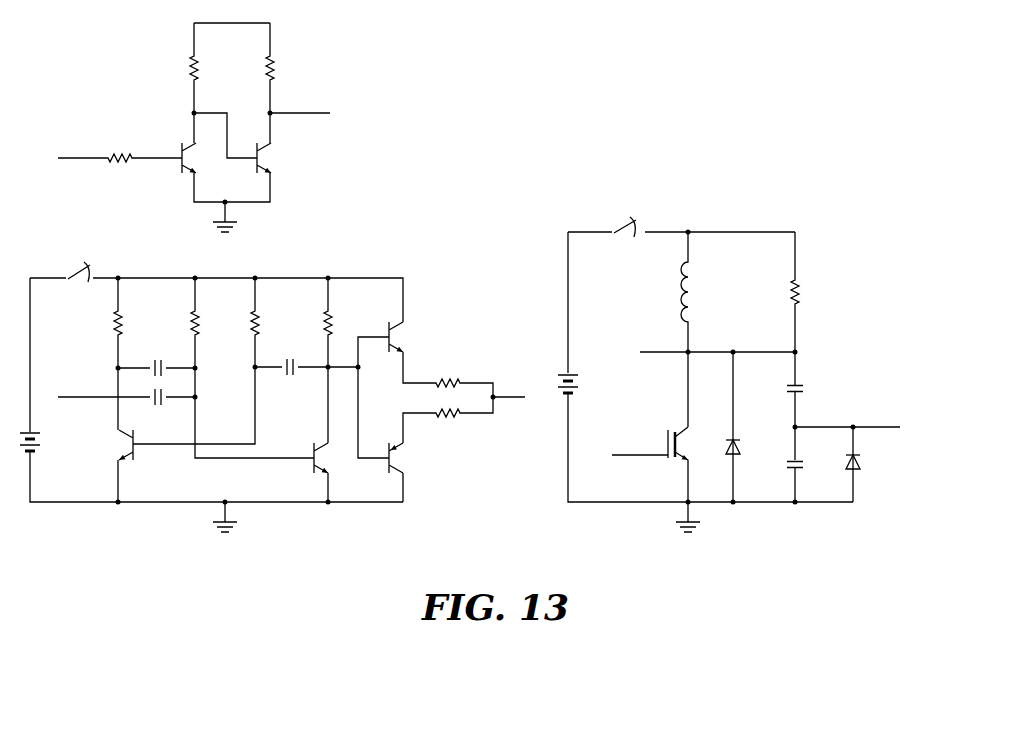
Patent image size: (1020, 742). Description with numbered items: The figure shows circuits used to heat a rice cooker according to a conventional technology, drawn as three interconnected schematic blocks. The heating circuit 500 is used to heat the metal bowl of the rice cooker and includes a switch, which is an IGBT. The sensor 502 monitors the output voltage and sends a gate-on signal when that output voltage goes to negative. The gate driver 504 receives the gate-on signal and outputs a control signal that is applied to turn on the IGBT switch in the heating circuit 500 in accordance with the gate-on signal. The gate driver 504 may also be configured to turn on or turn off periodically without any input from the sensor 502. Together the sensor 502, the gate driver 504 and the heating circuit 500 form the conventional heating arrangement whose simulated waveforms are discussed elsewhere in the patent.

The heating circuit 500 is at (732, 195).
The sensor 502 is at (343, 50).
The gate driver 504 is at (363, 248).